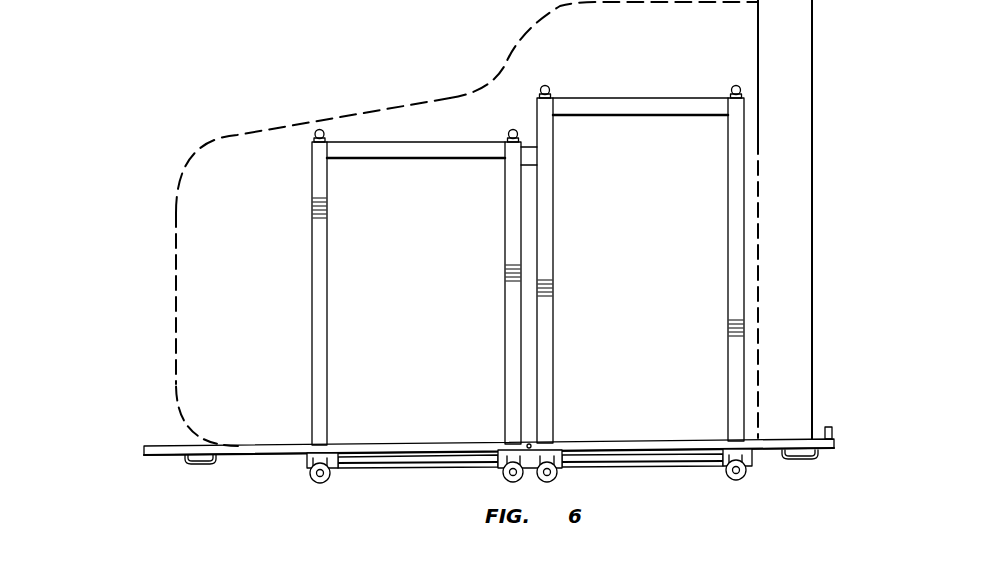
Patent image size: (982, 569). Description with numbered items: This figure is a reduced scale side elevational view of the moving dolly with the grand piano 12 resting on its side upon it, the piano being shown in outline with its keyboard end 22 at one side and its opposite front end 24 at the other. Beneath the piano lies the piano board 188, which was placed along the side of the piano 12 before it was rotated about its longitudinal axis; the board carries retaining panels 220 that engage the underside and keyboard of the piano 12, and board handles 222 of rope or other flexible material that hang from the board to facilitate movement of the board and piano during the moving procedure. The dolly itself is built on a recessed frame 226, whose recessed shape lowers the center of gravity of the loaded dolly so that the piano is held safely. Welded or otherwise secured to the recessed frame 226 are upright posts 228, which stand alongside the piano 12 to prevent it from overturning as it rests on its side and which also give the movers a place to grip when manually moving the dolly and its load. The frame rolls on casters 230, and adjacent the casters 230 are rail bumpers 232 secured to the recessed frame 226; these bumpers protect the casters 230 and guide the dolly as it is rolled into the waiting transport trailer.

The grand piano 12 is at (208, 211).
The keyboard end 22 is at (792, 167).
The front end 24 is at (202, 290).
The piano board 188 is at (230, 449).
The retaining panel 220 is at (833, 428).
The board handle 222 is at (190, 463).
The recessed frame 226 is at (404, 470).
The post 228 is at (312, 185).
The caster 230 is at (320, 484).
The rail bumper 232 is at (307, 463).